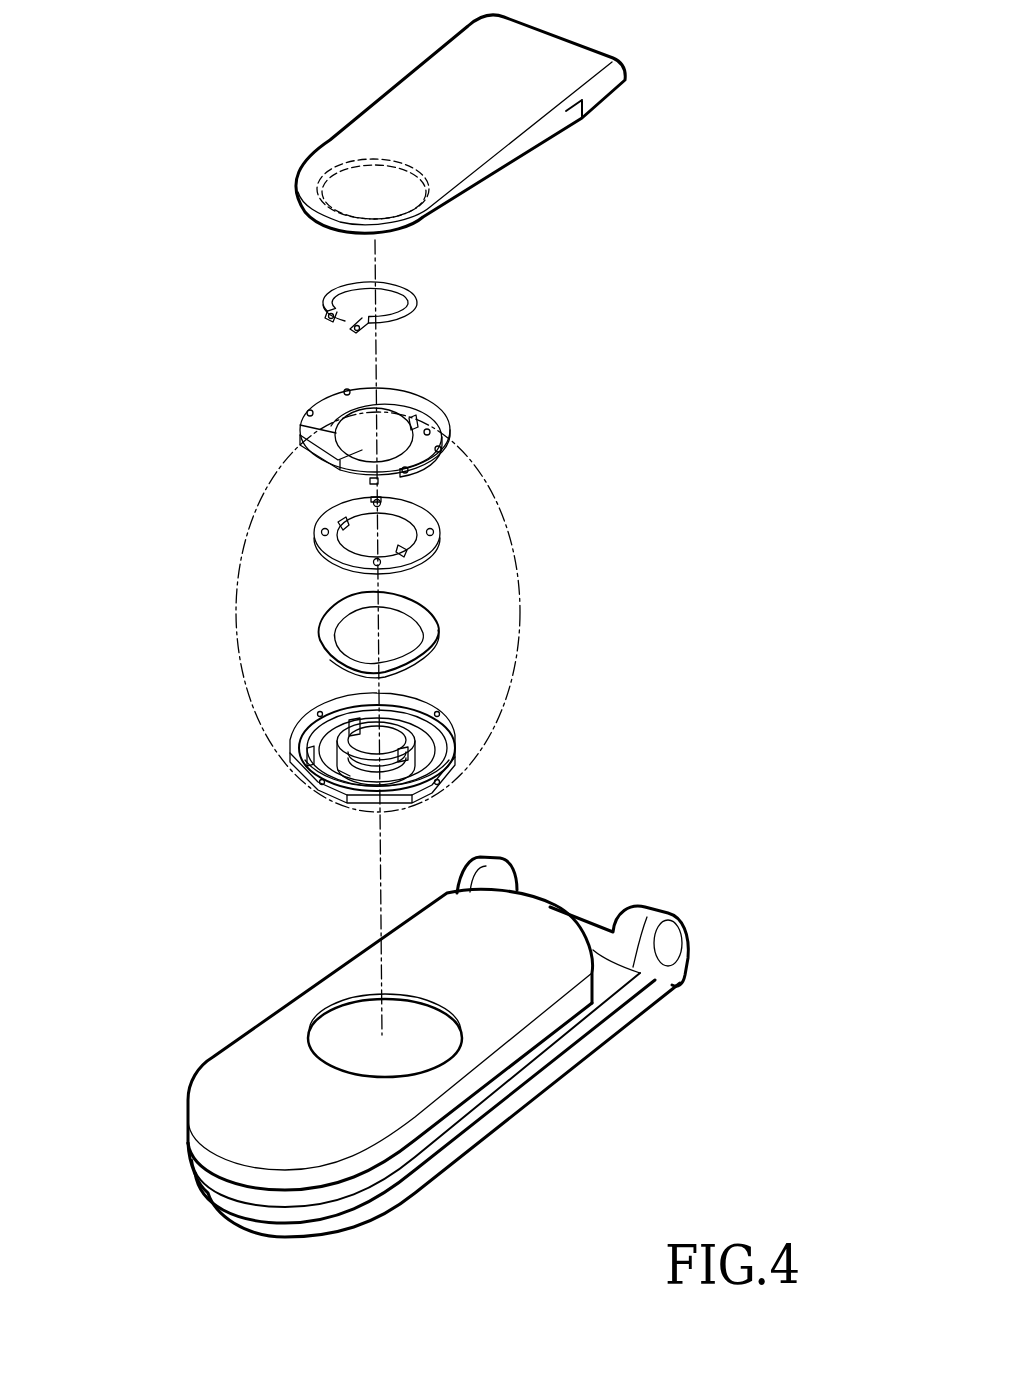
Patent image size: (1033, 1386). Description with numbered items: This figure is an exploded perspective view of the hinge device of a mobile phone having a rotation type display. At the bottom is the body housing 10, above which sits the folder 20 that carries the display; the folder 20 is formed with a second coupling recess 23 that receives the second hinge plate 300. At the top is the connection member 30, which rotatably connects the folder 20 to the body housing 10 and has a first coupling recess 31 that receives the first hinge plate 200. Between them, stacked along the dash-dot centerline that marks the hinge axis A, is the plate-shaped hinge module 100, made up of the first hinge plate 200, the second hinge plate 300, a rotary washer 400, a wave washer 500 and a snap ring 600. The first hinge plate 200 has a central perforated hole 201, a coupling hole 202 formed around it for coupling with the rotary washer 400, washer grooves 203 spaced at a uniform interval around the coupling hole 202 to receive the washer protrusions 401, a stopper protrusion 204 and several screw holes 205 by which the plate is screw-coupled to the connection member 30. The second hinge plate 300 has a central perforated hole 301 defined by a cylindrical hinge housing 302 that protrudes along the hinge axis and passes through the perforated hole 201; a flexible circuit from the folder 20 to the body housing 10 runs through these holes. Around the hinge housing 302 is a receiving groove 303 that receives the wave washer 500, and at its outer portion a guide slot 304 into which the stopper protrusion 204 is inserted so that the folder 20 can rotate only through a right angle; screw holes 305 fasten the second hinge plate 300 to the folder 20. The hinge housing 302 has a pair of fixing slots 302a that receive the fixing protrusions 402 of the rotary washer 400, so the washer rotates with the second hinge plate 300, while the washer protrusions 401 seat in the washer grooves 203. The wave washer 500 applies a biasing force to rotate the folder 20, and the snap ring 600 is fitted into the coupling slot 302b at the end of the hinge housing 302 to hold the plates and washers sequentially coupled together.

The body housing 10 is at (475, 1122).
The folder 20 is at (412, 1023).
The second coupling recess 23 is at (325, 1032).
The connection member 30 is at (447, 116).
The first coupling recess 31 is at (366, 166).
The hinge module 100 is at (447, 637).
The first hinge plate 200 is at (475, 426).
The perforated hole 201 is at (384, 422).
The coupling hole 202 is at (410, 452).
The washer groove 203 is at (418, 422).
The stopper protrusion 204 is at (378, 480).
The screw holes 205 is at (356, 382).
The second hinge plate 300 is at (413, 751).
The perforated hole 301 is at (393, 730).
The hinge housing 302 is at (419, 757).
The fixing slots 302a is at (355, 722).
The coupling slot 302b is at (345, 775).
The receiving groove 303 is at (430, 748).
The guide slot 304 is at (308, 753).
The screw holes 305 is at (440, 713).
The rotary washer 400 is at (267, 522).
The washer protrusion 401 is at (326, 531).
The fixing protrusions 402 is at (400, 550).
The wave washer 500 is at (337, 615).
The snap ring 600 is at (422, 295).
The hinge axis A is at (519, 610).